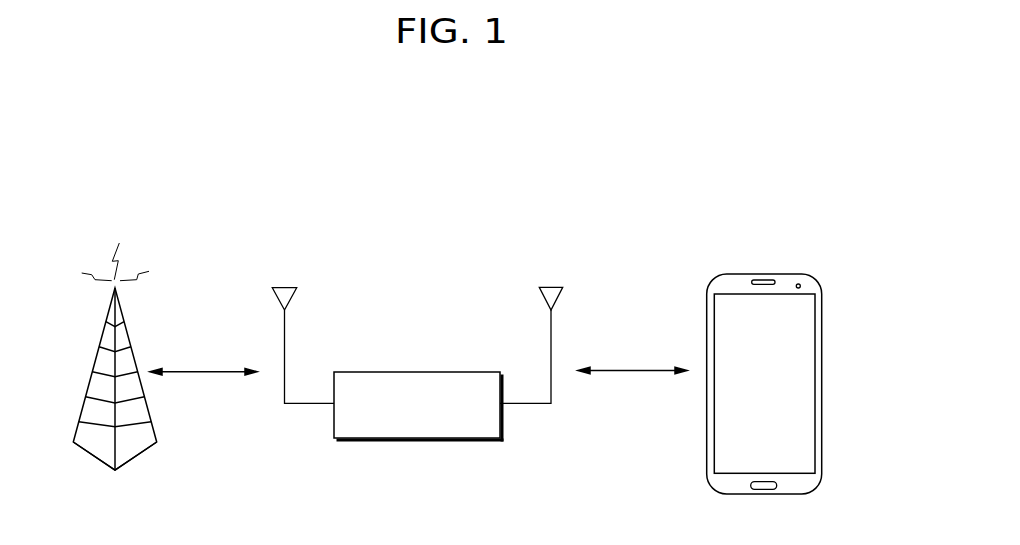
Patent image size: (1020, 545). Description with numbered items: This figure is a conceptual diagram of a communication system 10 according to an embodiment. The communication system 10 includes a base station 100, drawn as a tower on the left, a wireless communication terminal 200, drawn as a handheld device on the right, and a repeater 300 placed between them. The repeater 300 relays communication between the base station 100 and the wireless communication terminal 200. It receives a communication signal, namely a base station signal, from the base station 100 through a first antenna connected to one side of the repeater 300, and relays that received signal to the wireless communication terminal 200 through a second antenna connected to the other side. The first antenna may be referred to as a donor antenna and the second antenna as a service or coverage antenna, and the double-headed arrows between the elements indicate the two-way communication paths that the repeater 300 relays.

The communication system 10 is at (703, 198).
The base station 100 is at (130, 333).
The wireless communication terminal 200 is at (782, 274).
The repeater 300 is at (432, 372).